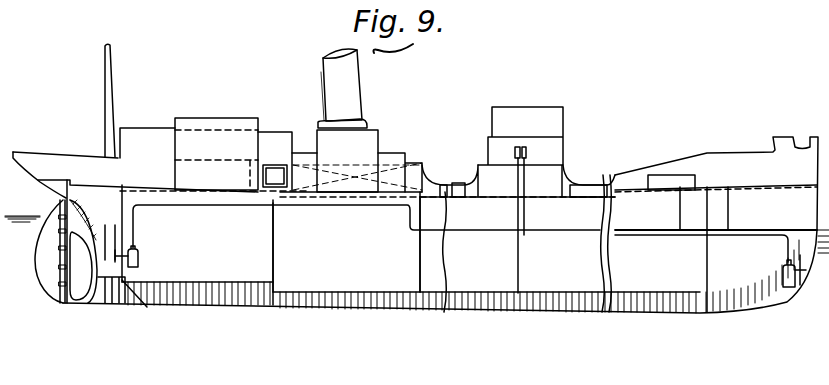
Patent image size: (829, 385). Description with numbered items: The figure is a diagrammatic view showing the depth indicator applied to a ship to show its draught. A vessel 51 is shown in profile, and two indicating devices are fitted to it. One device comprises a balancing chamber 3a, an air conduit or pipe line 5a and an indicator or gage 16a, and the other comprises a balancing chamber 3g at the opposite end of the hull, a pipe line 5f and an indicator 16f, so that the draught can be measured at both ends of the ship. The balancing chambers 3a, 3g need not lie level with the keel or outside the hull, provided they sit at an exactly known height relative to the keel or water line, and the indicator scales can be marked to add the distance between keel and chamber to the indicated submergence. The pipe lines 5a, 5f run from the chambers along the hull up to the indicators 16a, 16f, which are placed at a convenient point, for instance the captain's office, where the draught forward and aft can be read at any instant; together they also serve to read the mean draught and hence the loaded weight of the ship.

The balancing chamber 3a is at (138, 258).
The aft pressure fitting 3g is at (783, 268).
The air conduit or pipe line 5a is at (322, 208).
The pipe line 5f is at (652, 235).
The vessel 51 is at (330, 270).
The indicator or gage 16a is at (515, 152).
The indicator 16f is at (526, 152).